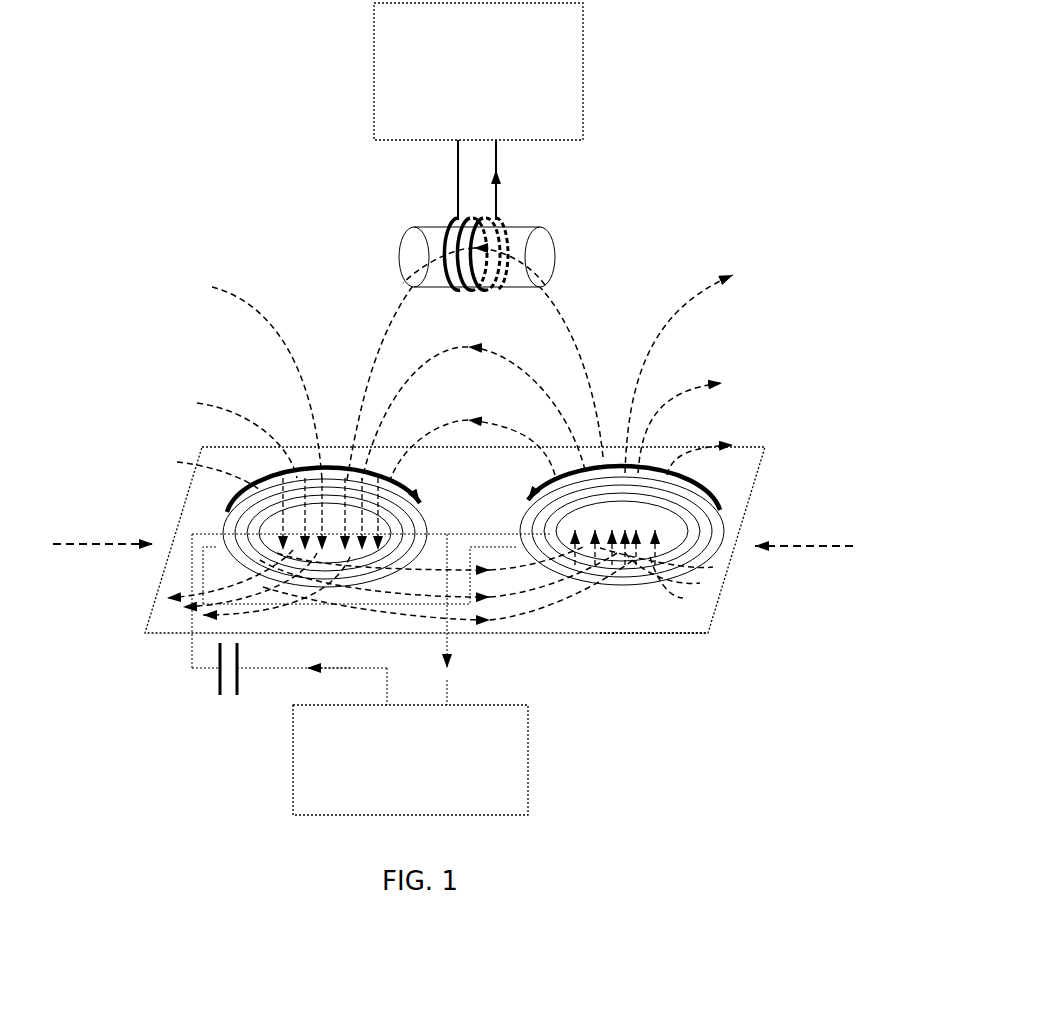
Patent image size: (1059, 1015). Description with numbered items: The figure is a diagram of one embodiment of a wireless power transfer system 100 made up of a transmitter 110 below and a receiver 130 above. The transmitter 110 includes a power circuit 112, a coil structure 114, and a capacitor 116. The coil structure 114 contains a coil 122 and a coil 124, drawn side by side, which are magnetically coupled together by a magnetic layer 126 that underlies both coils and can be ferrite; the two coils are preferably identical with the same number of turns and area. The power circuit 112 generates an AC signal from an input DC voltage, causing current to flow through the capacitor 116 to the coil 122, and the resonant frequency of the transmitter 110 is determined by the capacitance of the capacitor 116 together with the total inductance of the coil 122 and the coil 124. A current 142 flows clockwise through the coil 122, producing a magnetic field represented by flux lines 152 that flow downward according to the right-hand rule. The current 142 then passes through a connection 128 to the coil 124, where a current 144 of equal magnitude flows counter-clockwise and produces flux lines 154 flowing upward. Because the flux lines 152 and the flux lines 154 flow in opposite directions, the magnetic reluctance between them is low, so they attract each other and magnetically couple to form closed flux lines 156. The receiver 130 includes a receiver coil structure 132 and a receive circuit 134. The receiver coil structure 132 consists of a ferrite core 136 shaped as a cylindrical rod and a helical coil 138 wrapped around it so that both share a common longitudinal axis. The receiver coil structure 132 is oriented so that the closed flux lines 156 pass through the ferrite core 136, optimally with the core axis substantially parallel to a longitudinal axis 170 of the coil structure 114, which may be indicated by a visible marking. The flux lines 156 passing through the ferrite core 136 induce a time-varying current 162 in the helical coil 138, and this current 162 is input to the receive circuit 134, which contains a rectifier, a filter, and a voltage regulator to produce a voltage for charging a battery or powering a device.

The wireless power transfer system 100 is at (202, 195).
The transmitter 110 is at (597, 722).
The power circuit 112 is at (293, 762).
The coil structure 114 is at (147, 578).
The capacitor 116 is at (213, 680).
The coil 122 is at (228, 520).
The coil 124 is at (722, 532).
The magnetic layer 126 is at (637, 633).
The connection 128 is at (337, 604).
The receiver 130 is at (625, 160).
The receiver coil structure 132 is at (565, 255).
The receive circuit 134 is at (402, 142).
The ferrite core 136 is at (520, 226).
The helical coil 138 is at (456, 220).
The current 142 is at (273, 483).
The current 144 is at (714, 500).
The flux lines 152 is at (276, 322).
The flux lines 154 is at (672, 305).
The closed flux lines 156 is at (403, 297).
The current 162 is at (500, 172).
The longitudinal axis 170 is at (85, 543).